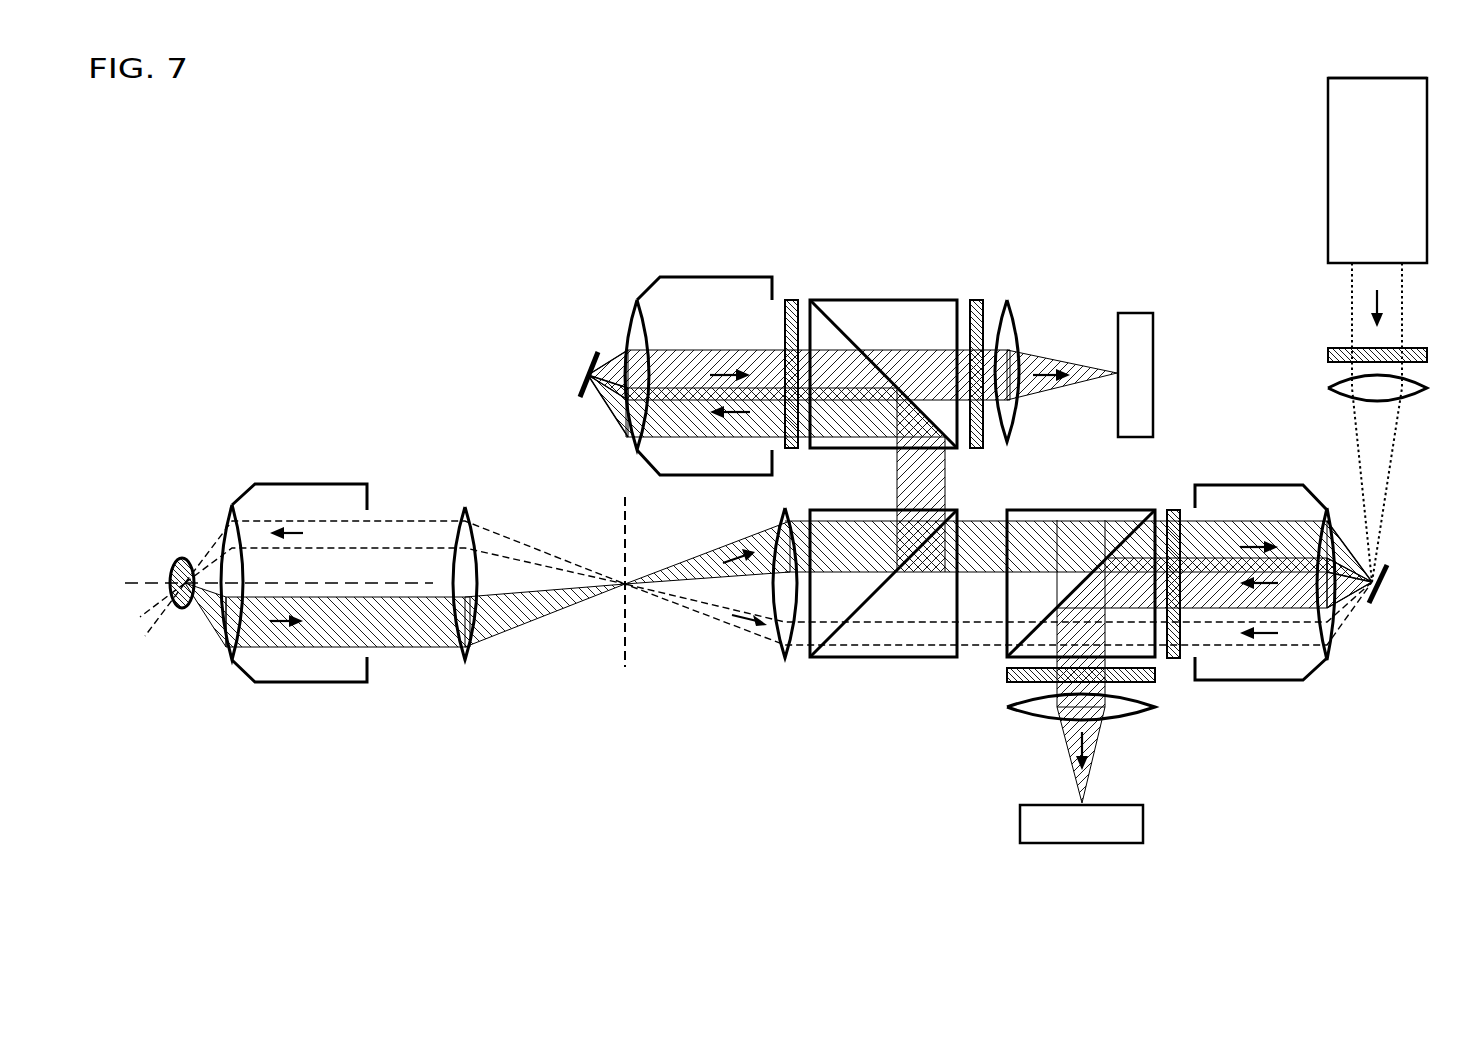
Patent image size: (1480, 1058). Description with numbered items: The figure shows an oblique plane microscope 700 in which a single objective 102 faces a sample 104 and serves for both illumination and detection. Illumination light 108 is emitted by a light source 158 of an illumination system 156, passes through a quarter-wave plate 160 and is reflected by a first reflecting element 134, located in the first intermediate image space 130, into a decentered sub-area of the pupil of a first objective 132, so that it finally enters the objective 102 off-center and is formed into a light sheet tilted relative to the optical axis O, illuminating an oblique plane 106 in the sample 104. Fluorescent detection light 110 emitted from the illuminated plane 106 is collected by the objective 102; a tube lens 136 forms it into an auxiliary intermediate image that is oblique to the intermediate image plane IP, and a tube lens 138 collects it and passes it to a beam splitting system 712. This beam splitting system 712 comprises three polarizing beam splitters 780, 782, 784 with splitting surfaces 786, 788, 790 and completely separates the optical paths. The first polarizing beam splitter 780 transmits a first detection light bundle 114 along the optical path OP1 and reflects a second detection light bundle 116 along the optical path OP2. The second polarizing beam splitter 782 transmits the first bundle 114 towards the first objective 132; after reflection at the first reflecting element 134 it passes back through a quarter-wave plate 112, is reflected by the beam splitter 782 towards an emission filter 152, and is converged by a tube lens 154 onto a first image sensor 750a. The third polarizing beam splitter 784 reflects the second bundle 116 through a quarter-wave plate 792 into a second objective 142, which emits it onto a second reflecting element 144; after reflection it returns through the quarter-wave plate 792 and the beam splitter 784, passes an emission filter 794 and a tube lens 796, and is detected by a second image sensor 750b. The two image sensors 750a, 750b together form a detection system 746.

The oblique plane microscope 700 is at (694, 106).
The optical axis O is at (134, 582).
The single objective 102 is at (313, 484).
The sample 104 is at (183, 557).
The illuminated plane 106 is at (148, 633).
The illumination light 108 is at (368, 532).
The detection light 110 is at (415, 645).
The tube lens 136 is at (472, 520).
The intermediate image plane IP is at (625, 515).
The tube lens 138 is at (790, 660).
The first polarizing beam splitter 780 is at (917, 657).
The splitting surface 786 is at (866, 603).
The second detection light bundle 116 is at (945, 472).
The second optical path OP2 is at (897, 472).
The first detection light bundle 114 is at (988, 527).
The second polarizing beam splitter 782 is at (1160, 505).
The splitting surface 788 is at (1070, 594).
The quarter-wave plate 112 is at (1174, 660).
The first objective 132 is at (1313, 672).
The first reflecting element 134 is at (1390, 570).
The first intermediate image space 130 is at (1352, 592).
The emission filter 152 is at (1005, 695).
The first optical path OP1 is at (1007, 672).
The tube lens 154 is at (1130, 720).
The first image sensor 750a is at (1083, 843).
The beam splitting system 712 is at (906, 785).
The detection system 746 is at (1255, 822).
The second objective 142 is at (713, 277).
The second reflecting element 144 is at (582, 376).
The quarter-wave plate 792 is at (792, 300).
The third polarizing beam splitter 784 is at (905, 300).
The splitting surface 790 is at (838, 328).
The emission filter 794 is at (977, 300).
The tube lens 796 is at (1013, 312).
The second image sensor 750b is at (1137, 313).
The illumination system 156 is at (1328, 195).
The light source 158 is at (1340, 142).
The quarter-wave plate 160 is at (1328, 355).